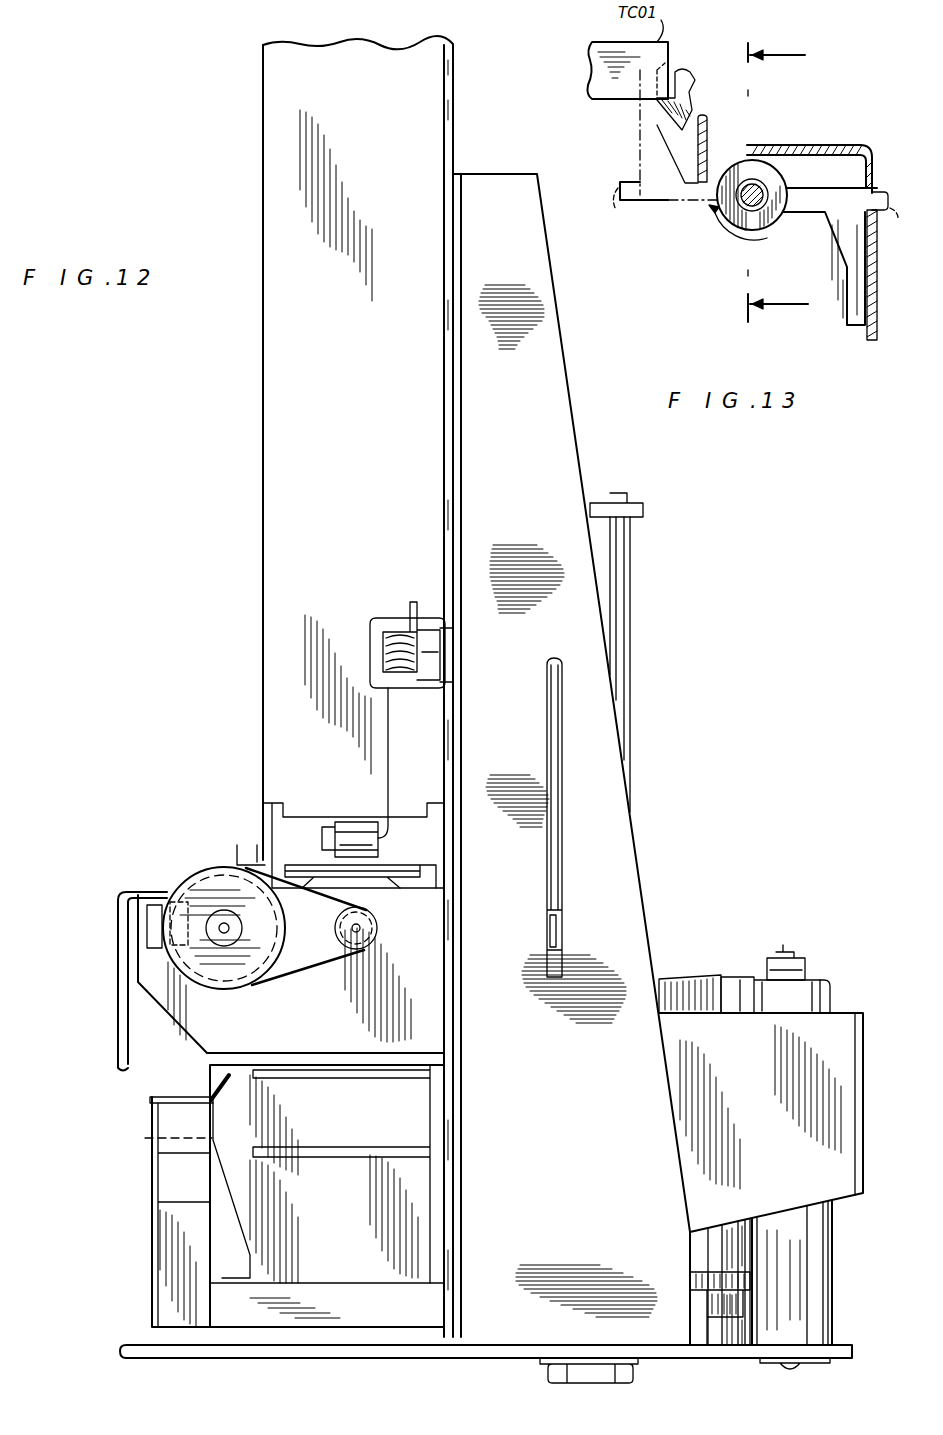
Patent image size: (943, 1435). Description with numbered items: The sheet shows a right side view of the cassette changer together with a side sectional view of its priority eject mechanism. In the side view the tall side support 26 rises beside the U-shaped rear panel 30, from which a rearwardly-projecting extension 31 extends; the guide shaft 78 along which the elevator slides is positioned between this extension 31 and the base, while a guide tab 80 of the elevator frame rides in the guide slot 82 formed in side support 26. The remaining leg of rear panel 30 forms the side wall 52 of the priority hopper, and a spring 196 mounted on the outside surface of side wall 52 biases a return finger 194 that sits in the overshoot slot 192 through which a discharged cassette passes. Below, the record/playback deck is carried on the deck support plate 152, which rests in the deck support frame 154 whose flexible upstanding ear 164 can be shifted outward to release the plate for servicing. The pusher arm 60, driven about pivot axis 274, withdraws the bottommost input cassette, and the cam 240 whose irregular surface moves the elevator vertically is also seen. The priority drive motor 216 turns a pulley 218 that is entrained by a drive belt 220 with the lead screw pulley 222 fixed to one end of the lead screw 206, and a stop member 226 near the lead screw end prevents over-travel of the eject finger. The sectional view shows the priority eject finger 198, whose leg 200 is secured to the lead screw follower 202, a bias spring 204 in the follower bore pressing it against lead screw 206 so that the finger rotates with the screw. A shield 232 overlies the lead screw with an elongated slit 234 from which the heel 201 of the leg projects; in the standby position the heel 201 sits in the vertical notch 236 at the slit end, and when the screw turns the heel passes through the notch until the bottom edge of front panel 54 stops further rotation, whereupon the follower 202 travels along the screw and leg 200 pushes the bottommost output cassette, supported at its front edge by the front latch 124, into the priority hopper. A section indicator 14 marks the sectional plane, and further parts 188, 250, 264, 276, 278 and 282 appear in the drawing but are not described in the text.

In FIG. 12, the side support 26 is at (550, 350).
In FIG. 12, the U-shaped rear panel 30 is at (453, 118).
In FIG. 12, the rearwardly-projecting extension 31 is at (643, 512).
In FIG. 12, the side wall 52 is at (265, 522).
In FIG. 13, the front panel 54 is at (708, 121).
In FIG. 12, the pusher arm 60 is at (698, 980).
In FIG. 12, the guide shaft 78 is at (622, 601).
In FIG. 12, the guide tab 80 is at (563, 946).
In FIG. 12, the guide slot 82 is at (547, 765).
In FIG. 13, the front latch 124 is at (694, 83).
In FIG. 12, the deck support plate 152 is at (150, 1137).
In FIG. 12, the deck support frame 154 is at (786, 1082).
In FIG. 12, the flexible upstanding ear 164 is at (157, 1268).
In FIG. 12, the support plate 188 is at (293, 857).
In FIG. 12, the overshoot slot 192 is at (306, 812).
In FIG. 12, the spring-biased return finger 194 is at (357, 828).
In FIG. 12, the spring 196 is at (392, 632).
In FIG. 13, the priority eject finger 198 is at (640, 182).
In FIG. 13, the leg 200 is at (657, 70).
In FIG. 13, the heel 201 is at (768, 216).
In FIG. 13, the lead screw follower 202 is at (768, 225).
In FIG. 13, the bias spring 204 is at (746, 182).
In FIG. 13, the lead screw 206 is at (768, 193).
In FIG. 12, the priority drive motor 216 is at (375, 885).
In FIG. 12, the pulley 218 is at (338, 944).
In FIG. 12, the drive belt 220 is at (298, 972).
In FIG. 12, the lead screw pulley 222 is at (278, 977).
In FIG. 12, the stop member 226 is at (148, 951).
In FIG. 12, the shield 232 is at (120, 915).
In FIG. 13, the shield 232 is at (827, 145).
In FIG. 13, the elongated slit 234 is at (880, 192).
In FIG. 13, the vertical notch 236 is at (877, 262).
In FIG. 12, the cam 240 is at (742, 1242).
In FIG. 12, the base plate 250 is at (632, 1377).
In FIG. 12, the block 264 is at (690, 1275).
In FIG. 12, the pivot axis 274 is at (783, 955).
In FIG. 12, the cylinder 276 is at (820, 1267).
In FIG. 12, the bracket 278 is at (830, 997).
In FIG. 12, the cylinder 282 is at (800, 974).
In FIG. 13, the section line 14 is at (794, 182).